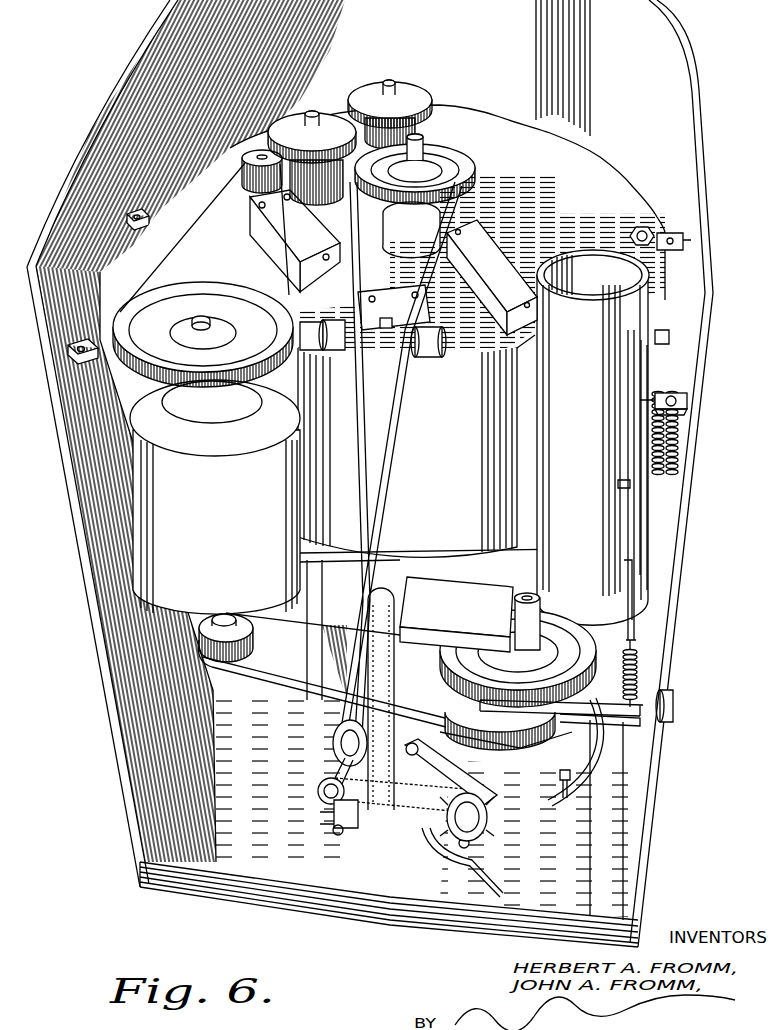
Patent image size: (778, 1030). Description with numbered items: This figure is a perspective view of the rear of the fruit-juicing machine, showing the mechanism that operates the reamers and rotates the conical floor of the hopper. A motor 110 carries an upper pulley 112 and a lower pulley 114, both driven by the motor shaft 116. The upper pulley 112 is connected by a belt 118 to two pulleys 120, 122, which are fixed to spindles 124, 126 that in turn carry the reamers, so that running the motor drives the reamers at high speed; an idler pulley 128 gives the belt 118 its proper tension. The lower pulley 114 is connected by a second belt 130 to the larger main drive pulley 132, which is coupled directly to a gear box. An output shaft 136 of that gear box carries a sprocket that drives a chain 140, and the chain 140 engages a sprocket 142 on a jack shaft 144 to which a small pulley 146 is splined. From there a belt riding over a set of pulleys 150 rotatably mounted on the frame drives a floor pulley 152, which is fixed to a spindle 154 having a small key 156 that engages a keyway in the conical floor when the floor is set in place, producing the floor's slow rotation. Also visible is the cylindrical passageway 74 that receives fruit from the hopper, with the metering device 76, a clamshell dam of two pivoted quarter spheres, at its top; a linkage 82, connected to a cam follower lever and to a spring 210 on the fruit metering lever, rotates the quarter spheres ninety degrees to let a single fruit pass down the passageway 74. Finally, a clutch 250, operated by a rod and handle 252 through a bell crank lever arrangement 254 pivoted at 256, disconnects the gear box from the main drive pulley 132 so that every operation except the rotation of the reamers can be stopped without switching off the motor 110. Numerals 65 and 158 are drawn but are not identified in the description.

The link rod 65 is at (610, 728).
The cylindrical passageway 74 is at (623, 527).
The metering device 76 is at (604, 283).
The linkage 82 is at (669, 343).
The motor 110 is at (194, 548).
The upper pulley 112 is at (153, 332).
The lower pulley 114 is at (200, 642).
The motor shaft 116 is at (213, 332).
The belt 118 is at (232, 220).
The pulley 120 is at (327, 117).
The pulley 122 is at (417, 108).
The spindle 124 is at (233, 140).
The spindle 126 is at (407, 80).
The idler pulley 128 is at (233, 187).
The belt 130 is at (294, 690).
The main drive pulley 132 is at (552, 676).
The output shaft 136 is at (470, 845).
The chain 140 is at (330, 792).
The sprocket 142 is at (334, 826).
The jack shaft 144 is at (345, 775).
The small pulley 146 is at (342, 748).
The set of pulleys 150 is at (403, 365).
The floor pulley 152 is at (460, 162).
The spindle 154 is at (437, 157).
The key 156 is at (437, 162).
The belt 158 is at (390, 434).
The spring 210 is at (639, 674).
The clutch 250 is at (527, 748).
The rod and handle 252 is at (575, 790).
The bell crank lever arrangement 254 is at (413, 793).
The pivot 256 is at (417, 752).